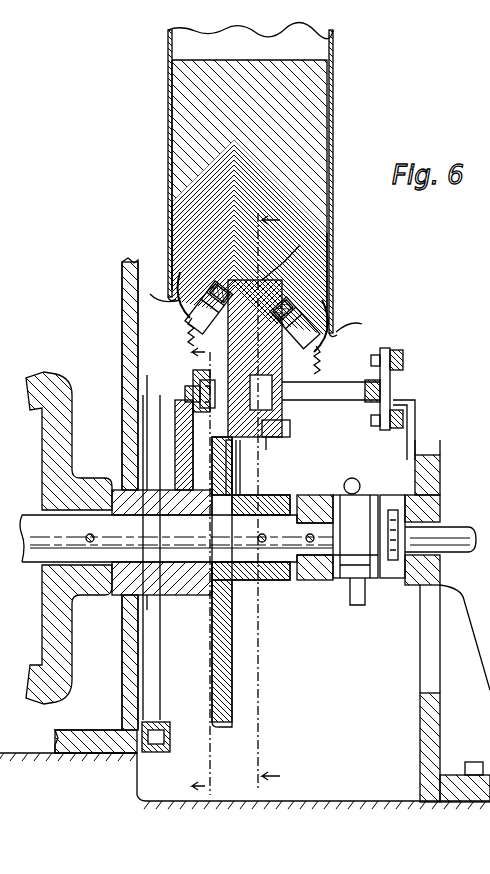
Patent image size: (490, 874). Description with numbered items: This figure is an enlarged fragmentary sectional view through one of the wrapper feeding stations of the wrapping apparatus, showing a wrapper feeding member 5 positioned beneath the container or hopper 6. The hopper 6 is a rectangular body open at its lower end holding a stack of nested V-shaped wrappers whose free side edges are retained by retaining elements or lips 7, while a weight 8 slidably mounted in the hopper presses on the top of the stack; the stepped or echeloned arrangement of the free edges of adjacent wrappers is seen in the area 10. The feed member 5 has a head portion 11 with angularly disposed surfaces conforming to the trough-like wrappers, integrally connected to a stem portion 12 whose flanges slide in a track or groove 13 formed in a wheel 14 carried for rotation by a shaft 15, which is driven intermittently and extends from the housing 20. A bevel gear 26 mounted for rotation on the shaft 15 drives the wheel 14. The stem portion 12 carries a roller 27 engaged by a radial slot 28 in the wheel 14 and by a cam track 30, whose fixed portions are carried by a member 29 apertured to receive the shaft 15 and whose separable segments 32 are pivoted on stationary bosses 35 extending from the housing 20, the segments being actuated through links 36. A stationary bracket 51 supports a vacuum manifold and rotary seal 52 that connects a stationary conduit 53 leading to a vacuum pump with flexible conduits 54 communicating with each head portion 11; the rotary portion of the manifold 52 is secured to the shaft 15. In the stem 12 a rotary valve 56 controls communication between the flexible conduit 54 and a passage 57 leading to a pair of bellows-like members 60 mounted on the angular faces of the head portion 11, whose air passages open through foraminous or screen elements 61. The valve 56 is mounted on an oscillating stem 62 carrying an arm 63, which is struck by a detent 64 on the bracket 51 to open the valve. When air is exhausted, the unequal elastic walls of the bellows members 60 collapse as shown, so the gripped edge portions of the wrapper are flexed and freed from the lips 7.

The wrapper feeding member 5 is at (300, 245).
The container or hopper 6 is at (170, 47).
The retaining element or lip 7 is at (258, 502).
The weight 8 is at (190, 93).
The echeloned edge area 10 is at (170, 226).
The head portion 11 is at (284, 262).
The stem portion 12 is at (232, 455).
The track or groove 13 is at (242, 490).
The wheel 14 is at (195, 372).
The shaft 15 is at (48, 575).
The housing 20 is at (122, 300).
The bevel gear 26 is at (66, 458).
The roller 27 is at (198, 386).
The radial slot 28 is at (240, 475).
The cam track member 29 is at (184, 420).
The cam track 30 is at (200, 640).
The separable cam track segment 32 is at (184, 394).
The stationary boss 35 is at (147, 440).
The link 36 is at (160, 720).
The stationary bracket 51 is at (440, 480).
The vacuum manifold and rotary seal 52 is at (388, 580).
The stationary conduit 53 is at (456, 526).
The flexible conduit 54 is at (350, 478).
The rotary valve 56 is at (288, 425).
The passage 57 is at (230, 318).
The bellows-like member 60 is at (190, 326).
The foraminous or screen element 61 is at (180, 278).
The oscillating stem 62 is at (352, 402).
The arm 63 is at (392, 386).
The detent 64 is at (412, 416).